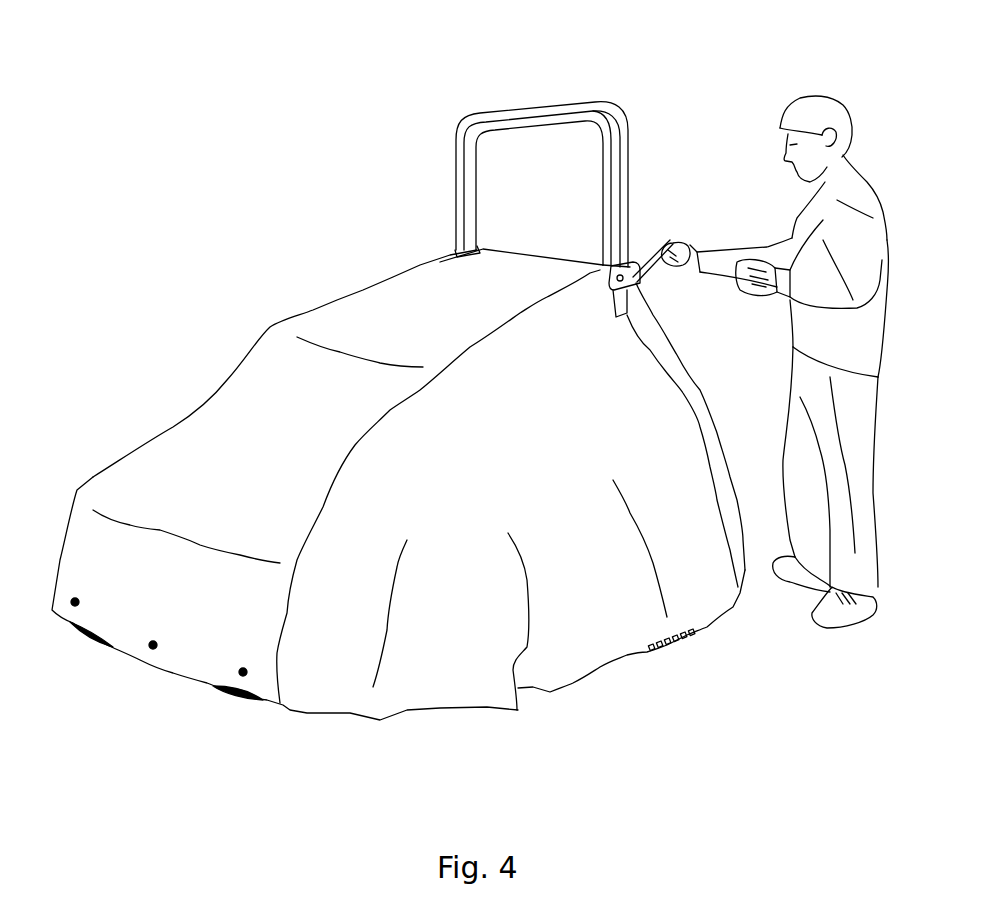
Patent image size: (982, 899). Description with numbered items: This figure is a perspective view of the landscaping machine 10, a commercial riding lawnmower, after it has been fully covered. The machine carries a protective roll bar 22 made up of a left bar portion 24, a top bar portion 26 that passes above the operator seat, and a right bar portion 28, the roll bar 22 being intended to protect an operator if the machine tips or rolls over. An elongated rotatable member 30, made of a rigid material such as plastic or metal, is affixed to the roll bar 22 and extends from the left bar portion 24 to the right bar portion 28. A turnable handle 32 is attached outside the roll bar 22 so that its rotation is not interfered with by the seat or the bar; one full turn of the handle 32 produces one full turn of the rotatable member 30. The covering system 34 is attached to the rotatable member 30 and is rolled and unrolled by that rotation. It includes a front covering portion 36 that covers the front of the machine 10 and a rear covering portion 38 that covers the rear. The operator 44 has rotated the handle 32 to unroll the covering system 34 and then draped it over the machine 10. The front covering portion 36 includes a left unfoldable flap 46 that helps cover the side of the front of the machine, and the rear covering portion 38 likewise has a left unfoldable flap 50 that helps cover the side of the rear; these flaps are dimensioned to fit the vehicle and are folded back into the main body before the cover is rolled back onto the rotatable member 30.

The landscaping machine 10 is at (293, 270).
The protective roll bar 22 is at (538, 148).
The left bar portion 24 is at (622, 160).
The top bar portion 26 is at (504, 114).
The right bar portion 28 is at (467, 187).
The elongated rotatable member 30 is at (545, 267).
The turnable handle 32 is at (680, 240).
The covering system 34 is at (500, 246).
The front covering portion 36 is at (140, 466).
The rear covering portion 38 is at (696, 424).
The left unfoldable flap of the rear covering portion 50 is at (655, 337).
The operator 44 is at (858, 223).
The left unfoldable flap 46 is at (603, 652).